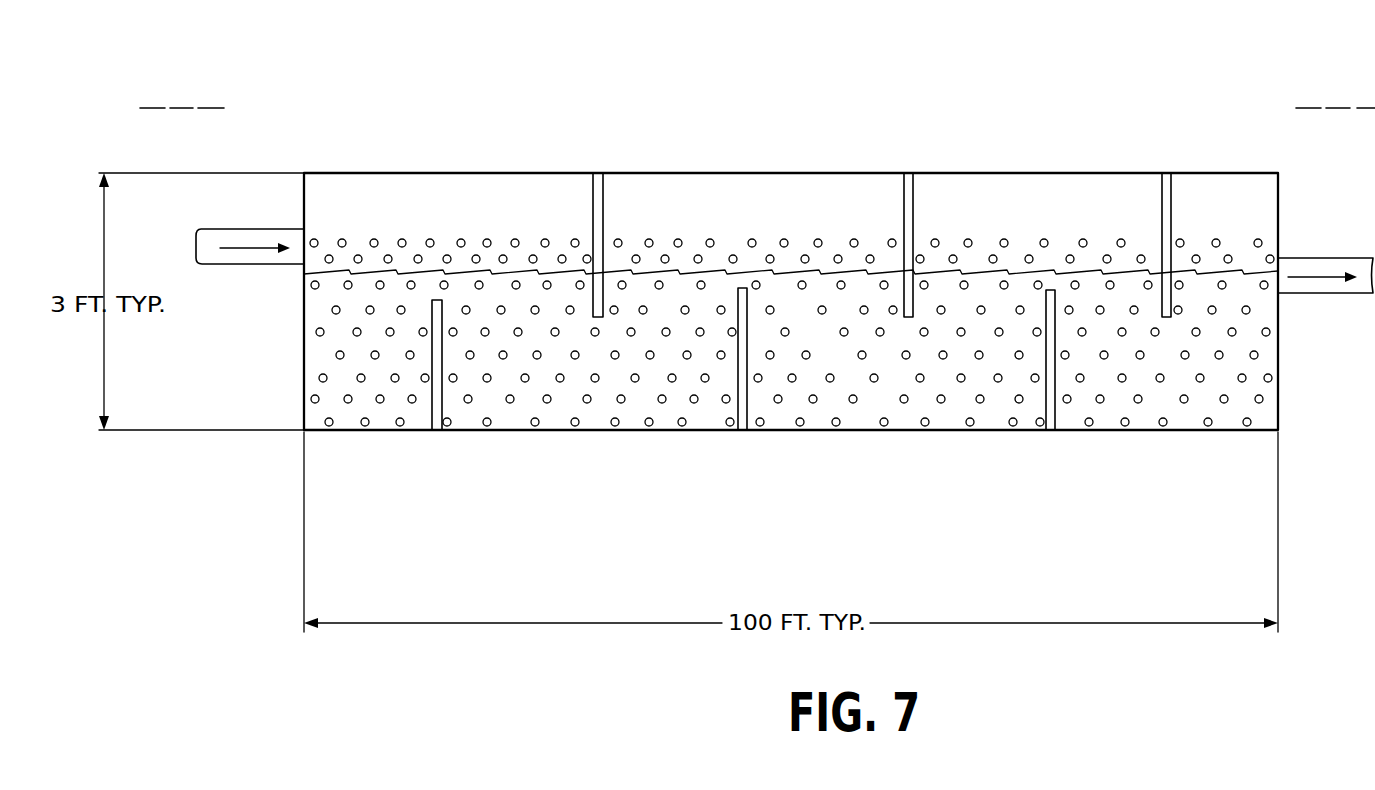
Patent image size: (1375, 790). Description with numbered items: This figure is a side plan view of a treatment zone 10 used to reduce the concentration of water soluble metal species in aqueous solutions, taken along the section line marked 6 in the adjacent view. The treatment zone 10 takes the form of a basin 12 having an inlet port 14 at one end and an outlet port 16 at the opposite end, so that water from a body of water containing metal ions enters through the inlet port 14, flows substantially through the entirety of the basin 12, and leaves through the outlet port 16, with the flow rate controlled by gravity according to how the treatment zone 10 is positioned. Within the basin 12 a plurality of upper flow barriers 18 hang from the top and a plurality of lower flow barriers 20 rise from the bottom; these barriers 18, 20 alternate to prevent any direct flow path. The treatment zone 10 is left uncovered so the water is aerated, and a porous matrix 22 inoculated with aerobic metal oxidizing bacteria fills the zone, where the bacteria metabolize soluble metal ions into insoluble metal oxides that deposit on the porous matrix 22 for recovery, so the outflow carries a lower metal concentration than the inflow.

The section line 6- 6 is at (182, 100).
The treatment zone 10 is at (1052, 155).
The basin 12 is at (378, 172).
The inlet port 14 is at (246, 259).
The outlet port 16 is at (1331, 287).
The upper flow barriers 18 is at (604, 199).
The lower flow barriers 20 is at (442, 405).
The porous matrix 22 is at (648, 393).